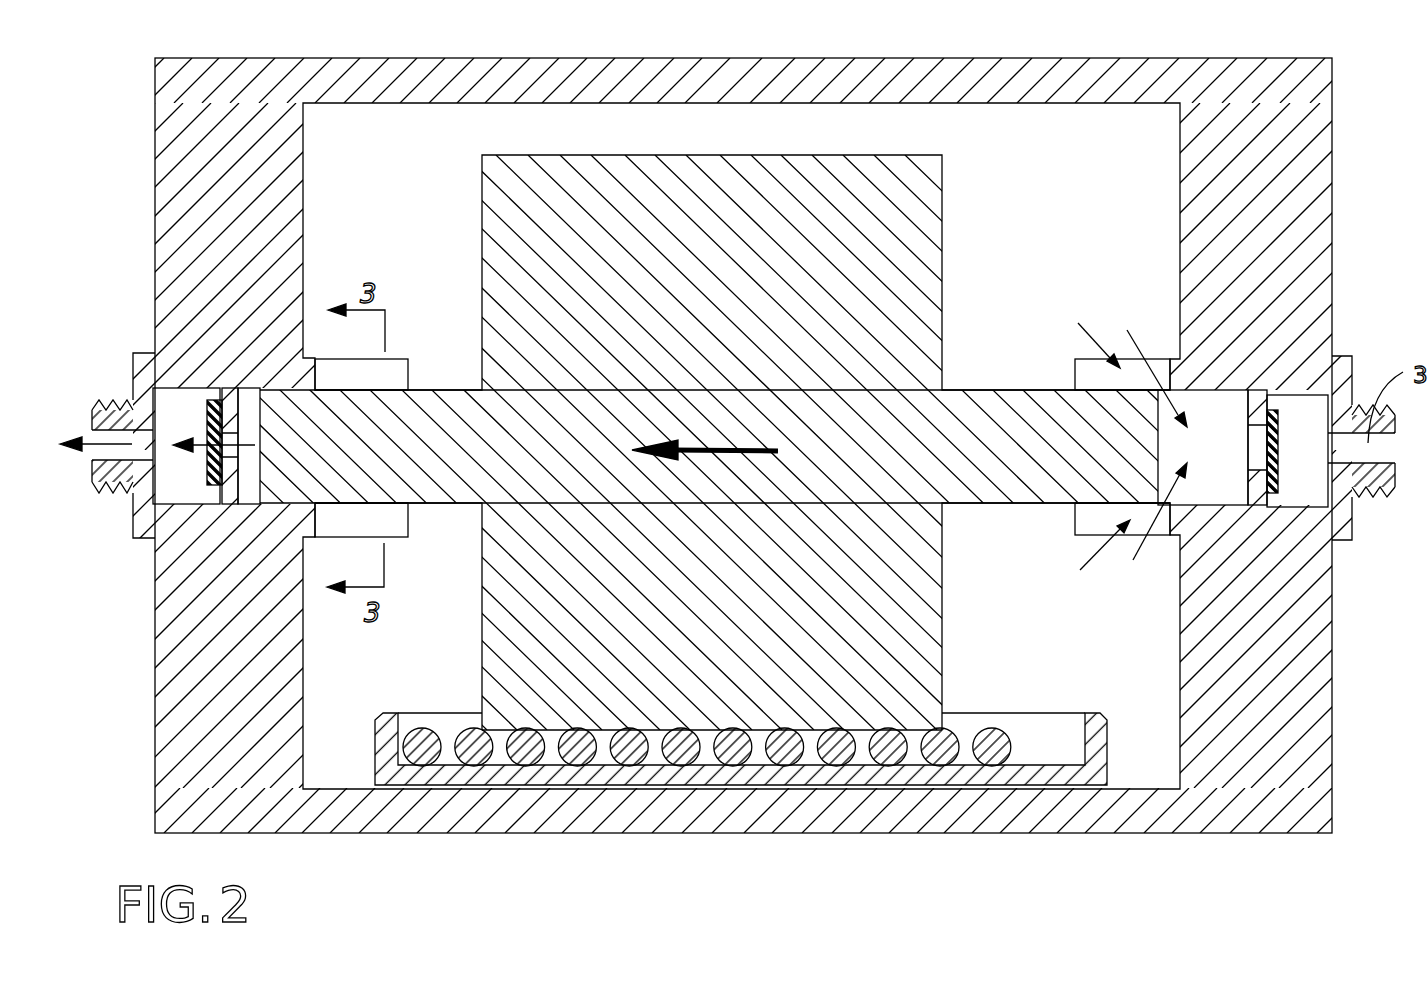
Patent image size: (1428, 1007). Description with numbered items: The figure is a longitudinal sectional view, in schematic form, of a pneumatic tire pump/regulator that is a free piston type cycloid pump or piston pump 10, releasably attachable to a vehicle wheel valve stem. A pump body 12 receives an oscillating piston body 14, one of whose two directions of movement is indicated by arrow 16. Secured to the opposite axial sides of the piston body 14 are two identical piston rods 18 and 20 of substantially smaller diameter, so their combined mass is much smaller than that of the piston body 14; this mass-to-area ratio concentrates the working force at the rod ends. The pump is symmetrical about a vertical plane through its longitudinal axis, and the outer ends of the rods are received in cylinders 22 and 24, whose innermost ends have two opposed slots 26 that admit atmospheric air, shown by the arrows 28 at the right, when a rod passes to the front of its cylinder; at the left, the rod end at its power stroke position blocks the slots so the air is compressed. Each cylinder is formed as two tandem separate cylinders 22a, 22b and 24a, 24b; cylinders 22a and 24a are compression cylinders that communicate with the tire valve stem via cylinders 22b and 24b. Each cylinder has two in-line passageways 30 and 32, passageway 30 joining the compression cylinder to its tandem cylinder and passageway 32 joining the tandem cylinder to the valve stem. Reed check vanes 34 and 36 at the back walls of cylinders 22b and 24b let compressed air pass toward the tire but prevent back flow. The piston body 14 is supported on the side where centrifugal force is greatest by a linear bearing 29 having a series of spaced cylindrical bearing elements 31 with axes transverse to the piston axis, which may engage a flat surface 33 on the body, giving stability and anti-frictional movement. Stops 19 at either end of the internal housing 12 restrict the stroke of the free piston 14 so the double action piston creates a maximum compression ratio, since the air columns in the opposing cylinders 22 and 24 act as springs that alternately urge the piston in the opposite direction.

The piston pump 10 is at (140, 771).
The pump body 12 is at (520, 822).
The piston body 14 is at (510, 228).
The arrow 16 is at (738, 450).
The piston rod 18 is at (425, 400).
The stops 19 is at (408, 515).
The piston rod 20 is at (957, 417).
The cylinder 22 is at (300, 352).
The compression cylinder 22a is at (247, 400).
The cylinder 22b is at (178, 487).
The cylinder 24 is at (1225, 365).
The compression cylinder 24a is at (1220, 500).
The cylinder 24b is at (1297, 397).
The slots 26 is at (397, 530).
The arrows 28 is at (1092, 333).
The linear bearing 29 is at (683, 787).
The passageway 30 is at (1252, 443).
The cylindrical bearing elements 31 is at (785, 762).
The passageway 32 is at (132, 485).
The flat surface 33 is at (707, 733).
The reed check vane 34 is at (208, 447).
The reed check vane 36 is at (1307, 473).